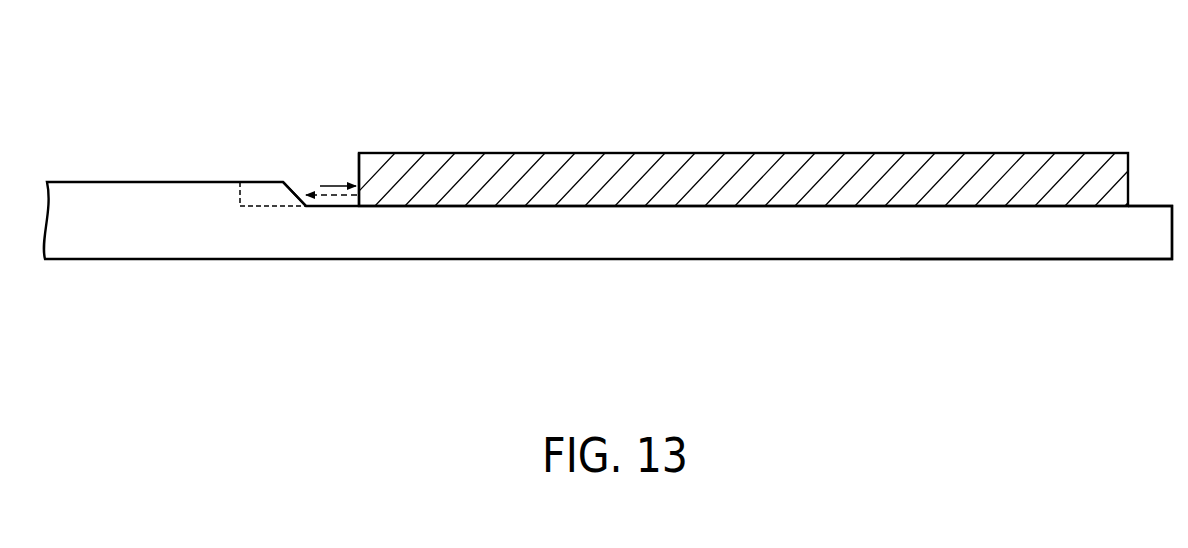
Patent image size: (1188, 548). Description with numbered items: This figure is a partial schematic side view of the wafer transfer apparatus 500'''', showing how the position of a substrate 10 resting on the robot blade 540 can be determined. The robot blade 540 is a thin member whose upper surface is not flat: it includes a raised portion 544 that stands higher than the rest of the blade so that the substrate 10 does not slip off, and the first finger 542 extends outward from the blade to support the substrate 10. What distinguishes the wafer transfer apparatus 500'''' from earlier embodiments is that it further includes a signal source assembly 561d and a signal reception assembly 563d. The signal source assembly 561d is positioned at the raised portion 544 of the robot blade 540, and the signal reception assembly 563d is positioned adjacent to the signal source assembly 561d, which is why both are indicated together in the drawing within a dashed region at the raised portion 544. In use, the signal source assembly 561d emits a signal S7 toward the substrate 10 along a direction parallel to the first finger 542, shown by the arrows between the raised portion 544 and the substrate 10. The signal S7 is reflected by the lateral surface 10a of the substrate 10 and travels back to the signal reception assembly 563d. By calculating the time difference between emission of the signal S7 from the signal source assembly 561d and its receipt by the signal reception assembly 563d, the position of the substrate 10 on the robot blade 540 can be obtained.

The wafer transfer apparatus 500'''' is at (609, 183).
The substrate 10 is at (742, 154).
The lateral surface 10a is at (360, 170).
The signal S7 is at (326, 185).
The raised portion 544 is at (285, 181).
The signal source assembly 561d is at (275, 258).
The signal reception assembly 563d is at (277, 196).
The robot blade 540 is at (608, 238).
The first finger 542 is at (943, 237).